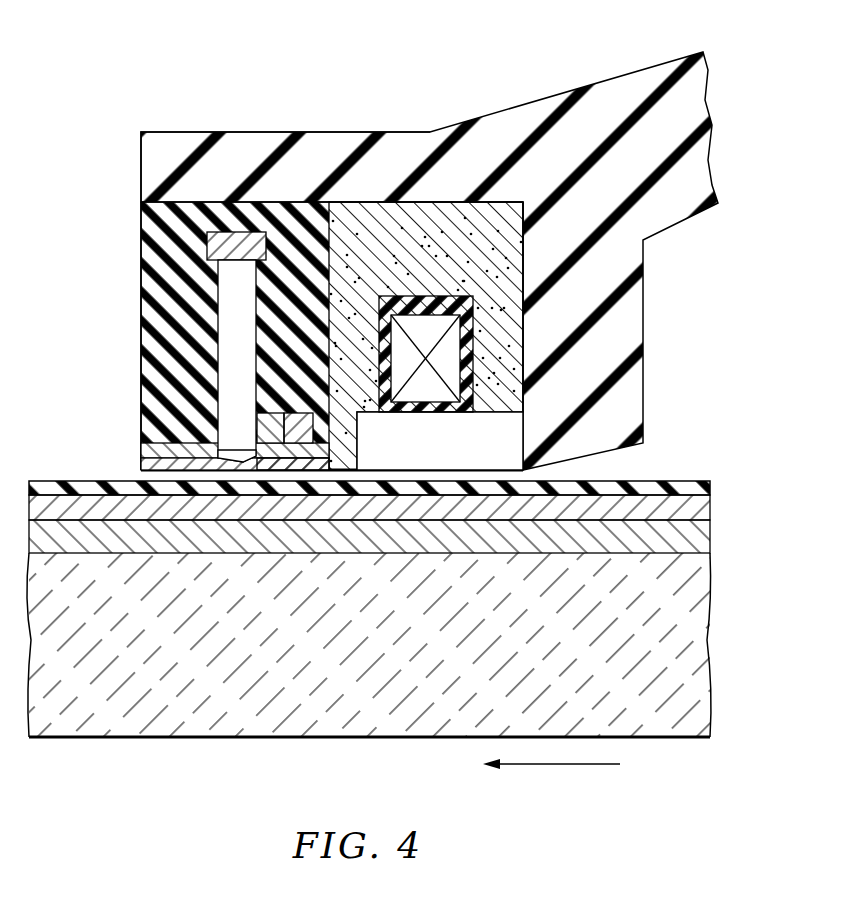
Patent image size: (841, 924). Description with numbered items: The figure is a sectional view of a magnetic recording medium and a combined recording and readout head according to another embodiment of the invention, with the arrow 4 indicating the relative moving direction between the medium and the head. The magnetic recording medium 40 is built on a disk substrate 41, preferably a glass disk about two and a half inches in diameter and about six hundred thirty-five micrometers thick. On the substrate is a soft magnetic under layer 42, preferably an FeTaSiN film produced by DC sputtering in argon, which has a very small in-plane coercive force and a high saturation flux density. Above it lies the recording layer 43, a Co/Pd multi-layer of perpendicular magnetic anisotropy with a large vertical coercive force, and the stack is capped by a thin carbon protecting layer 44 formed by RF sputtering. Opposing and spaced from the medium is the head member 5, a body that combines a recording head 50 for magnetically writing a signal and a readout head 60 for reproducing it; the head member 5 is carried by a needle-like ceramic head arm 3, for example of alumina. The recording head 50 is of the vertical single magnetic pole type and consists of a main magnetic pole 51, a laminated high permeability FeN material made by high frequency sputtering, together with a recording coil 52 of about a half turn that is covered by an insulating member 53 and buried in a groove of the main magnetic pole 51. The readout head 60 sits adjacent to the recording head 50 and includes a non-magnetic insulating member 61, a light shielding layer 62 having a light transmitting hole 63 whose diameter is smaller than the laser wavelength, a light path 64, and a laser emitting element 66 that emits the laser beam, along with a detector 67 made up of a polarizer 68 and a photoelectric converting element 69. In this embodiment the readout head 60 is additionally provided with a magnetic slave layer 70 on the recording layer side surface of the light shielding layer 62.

The ceramic head arm 3 is at (623, 90).
The arrow 4 is at (560, 765).
The head member 5 is at (305, 204).
The magnetic recording medium 40 is at (410, 619).
The disk substrate 41 is at (695, 665).
The soft magnetic under layer 42 is at (705, 540).
The recording layer 43 is at (705, 508).
The protecting layer 44 is at (697, 480).
The recording head 50 is at (455, 210).
The main magnetic pole 51 is at (516, 242).
The recording coil 52 is at (412, 398).
The insulating member 53 is at (420, 304).
The readout head 60 is at (217, 200).
The non-magnetic insulating member 61 is at (170, 212).
The light shielding layer 62 is at (157, 440).
The light transmitting hole 63 is at (240, 460).
The light path 64 is at (230, 313).
The laser emitting element 66 is at (262, 232).
The detector 67 is at (287, 468).
The polarizer 68 is at (273, 420).
The photoelectric converting element 69 is at (300, 437).
The magnetic slave layer 70 is at (150, 463).